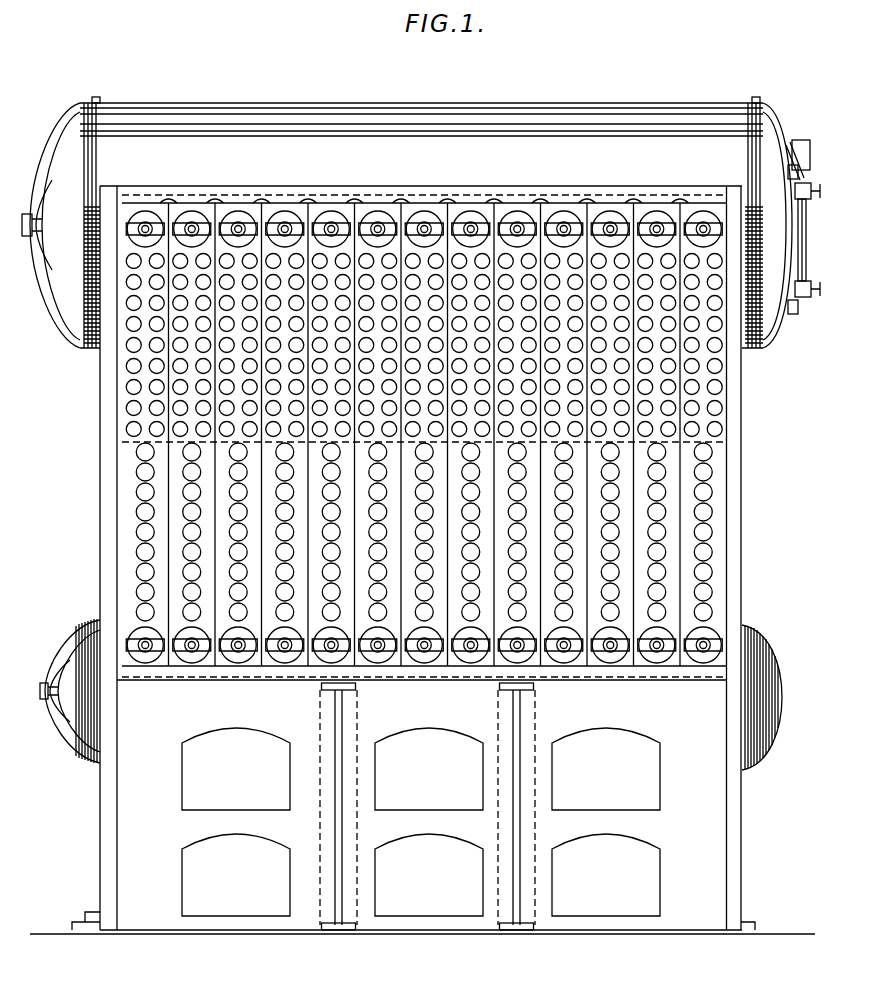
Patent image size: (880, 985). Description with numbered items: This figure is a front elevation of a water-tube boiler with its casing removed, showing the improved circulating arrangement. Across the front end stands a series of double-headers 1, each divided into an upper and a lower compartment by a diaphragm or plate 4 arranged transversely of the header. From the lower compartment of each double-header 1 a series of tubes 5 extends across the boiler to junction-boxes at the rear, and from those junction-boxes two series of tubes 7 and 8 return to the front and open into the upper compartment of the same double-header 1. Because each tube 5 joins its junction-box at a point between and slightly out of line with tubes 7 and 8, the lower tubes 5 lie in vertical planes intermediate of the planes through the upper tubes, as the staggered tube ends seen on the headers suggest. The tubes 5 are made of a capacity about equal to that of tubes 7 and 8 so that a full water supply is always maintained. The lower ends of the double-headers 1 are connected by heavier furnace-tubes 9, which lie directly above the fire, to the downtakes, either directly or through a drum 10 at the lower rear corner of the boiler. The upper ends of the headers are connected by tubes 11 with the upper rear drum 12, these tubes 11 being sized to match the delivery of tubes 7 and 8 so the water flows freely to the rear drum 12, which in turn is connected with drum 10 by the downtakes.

The double-header 1 is at (122, 497).
The diaphragm or plate 4 is at (122, 442).
The tube 5 is at (140, 553).
The tube 7 is at (152, 368).
The tube 8 is at (128, 366).
The furnace-tube 9 is at (238, 657).
The drum 10 is at (770, 656).
The tube 11 is at (323, 194).
The upper rear drum 12 is at (782, 126).